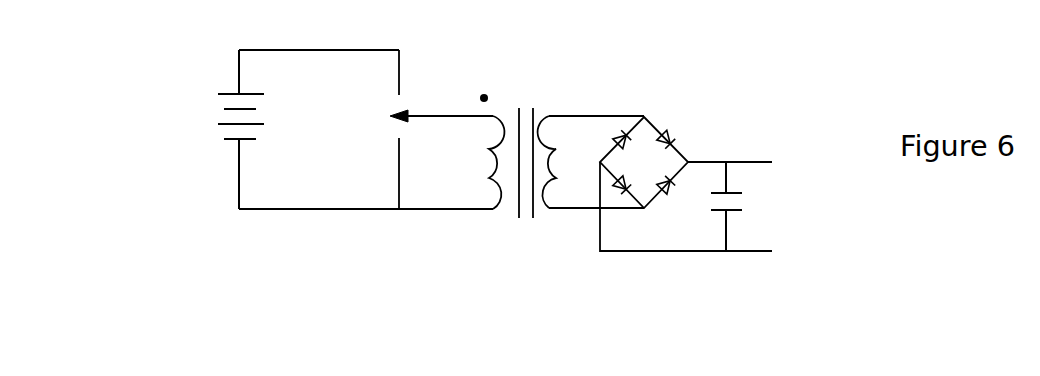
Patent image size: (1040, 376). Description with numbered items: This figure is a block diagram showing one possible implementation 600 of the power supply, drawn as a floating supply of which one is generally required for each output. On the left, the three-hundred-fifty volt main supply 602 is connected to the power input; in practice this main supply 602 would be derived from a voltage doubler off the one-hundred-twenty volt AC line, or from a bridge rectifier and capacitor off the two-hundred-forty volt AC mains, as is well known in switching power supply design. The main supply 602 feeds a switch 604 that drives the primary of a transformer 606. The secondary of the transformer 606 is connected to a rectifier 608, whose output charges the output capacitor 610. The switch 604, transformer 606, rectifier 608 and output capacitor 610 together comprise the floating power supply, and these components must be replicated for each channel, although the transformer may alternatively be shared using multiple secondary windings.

The implementation of power supply 600 is at (500, 38).
The main supply 602 is at (214, 129).
The switch 604 is at (441, 129).
The transformer 606 is at (562, 142).
The rectifier 608 is at (686, 179).
The output capacitor 610 is at (769, 206).